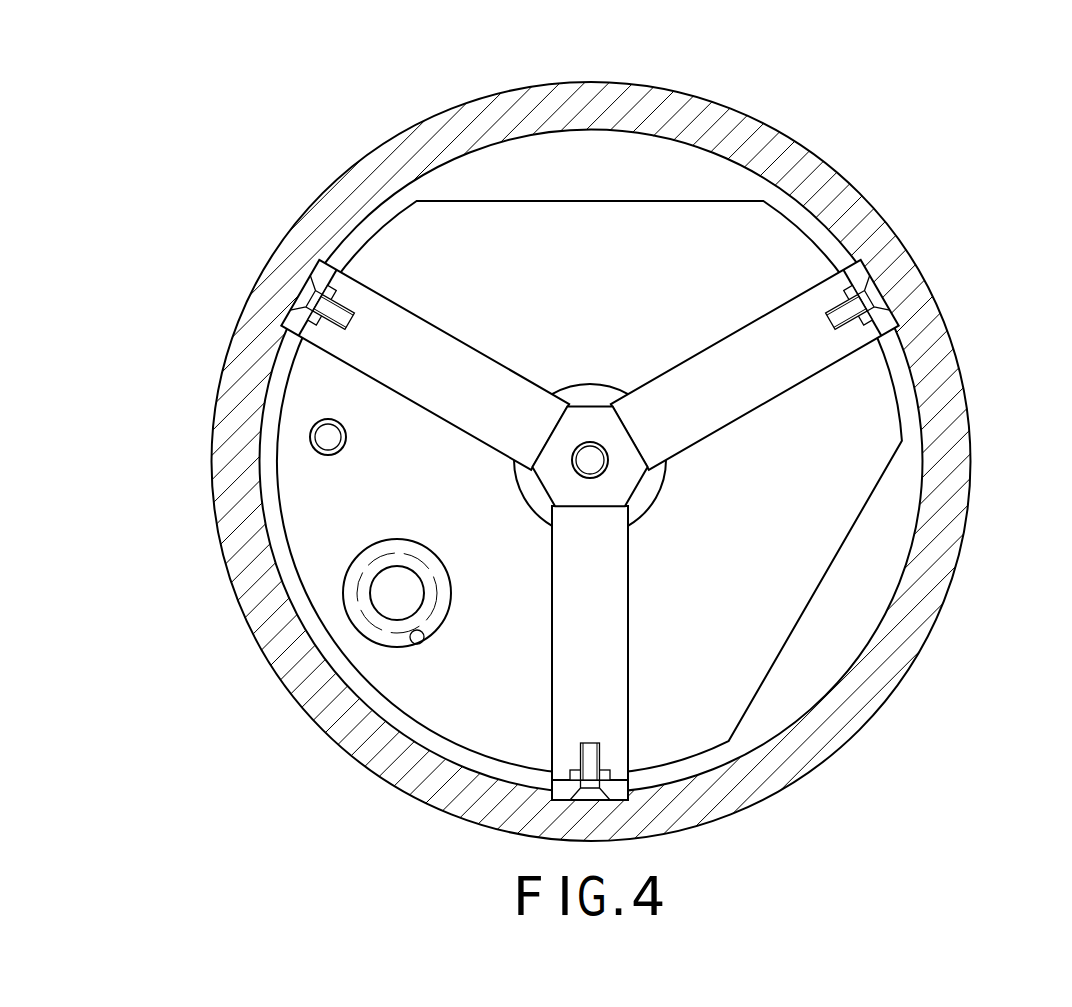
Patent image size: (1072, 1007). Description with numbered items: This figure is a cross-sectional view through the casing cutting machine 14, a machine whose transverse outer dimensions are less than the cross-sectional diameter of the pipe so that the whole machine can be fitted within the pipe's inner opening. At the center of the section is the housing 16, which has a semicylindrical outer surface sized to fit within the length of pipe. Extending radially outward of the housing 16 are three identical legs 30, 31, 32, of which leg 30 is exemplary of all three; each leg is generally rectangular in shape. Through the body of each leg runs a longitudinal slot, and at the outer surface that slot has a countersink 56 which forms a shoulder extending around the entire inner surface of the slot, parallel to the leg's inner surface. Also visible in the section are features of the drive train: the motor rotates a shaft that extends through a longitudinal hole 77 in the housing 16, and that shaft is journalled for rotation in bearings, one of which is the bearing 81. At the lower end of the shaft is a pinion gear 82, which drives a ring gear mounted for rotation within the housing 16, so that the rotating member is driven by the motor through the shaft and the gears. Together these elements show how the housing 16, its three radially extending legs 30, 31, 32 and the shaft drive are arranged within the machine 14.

The casing cutting machine 14 is at (620, 181).
The housing 16 is at (500, 252).
The leg 30 is at (828, 365).
The leg 31 is at (398, 318).
The leg 32 is at (629, 598).
The countersink 56 is at (642, 488).
The longitudinal hole 77 is at (423, 634).
The bearing 81 is at (375, 613).
The pinion gear 82 is at (393, 635).